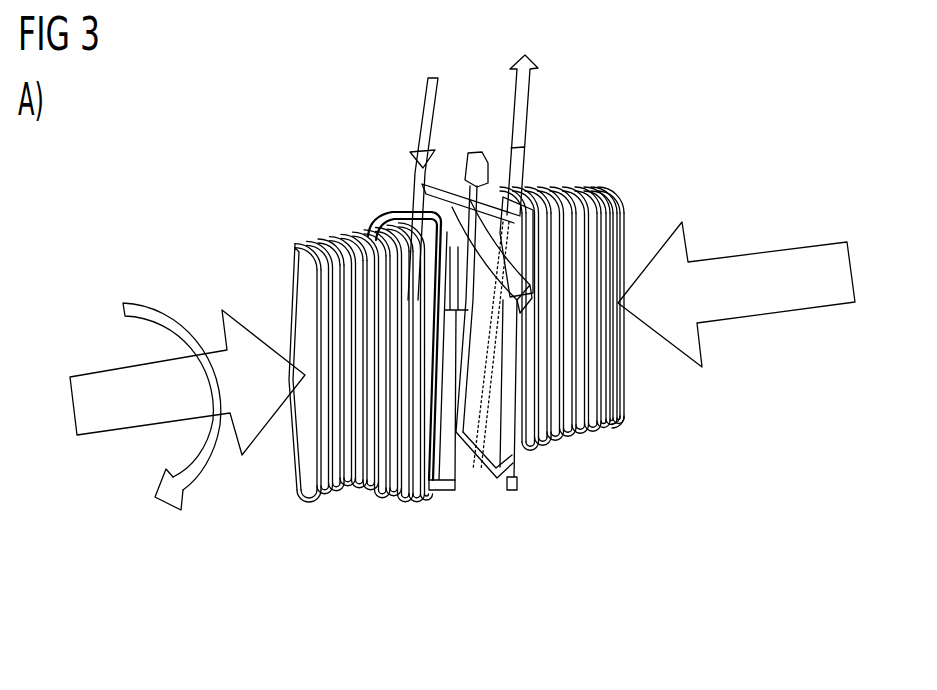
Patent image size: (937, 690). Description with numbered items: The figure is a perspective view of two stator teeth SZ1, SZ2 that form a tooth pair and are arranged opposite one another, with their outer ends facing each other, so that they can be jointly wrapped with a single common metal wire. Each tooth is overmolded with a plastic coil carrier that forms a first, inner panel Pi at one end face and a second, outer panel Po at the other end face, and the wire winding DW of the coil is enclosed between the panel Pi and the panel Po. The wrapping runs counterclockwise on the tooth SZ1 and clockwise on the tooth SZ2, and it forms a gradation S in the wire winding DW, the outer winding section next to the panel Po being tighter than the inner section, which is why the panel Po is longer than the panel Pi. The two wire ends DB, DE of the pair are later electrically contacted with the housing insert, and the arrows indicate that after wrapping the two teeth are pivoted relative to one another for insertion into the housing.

The wire winding DW is at (332, 240).
The gradation S is at (368, 222).
The wire end DB is at (393, 163).
The wire end DE is at (522, 172).
The first panel Pi is at (636, 478).
The stator tooth SZ1 is at (370, 512).
The second panel Po is at (510, 495).
The stator tooth SZ2 is at (570, 462).